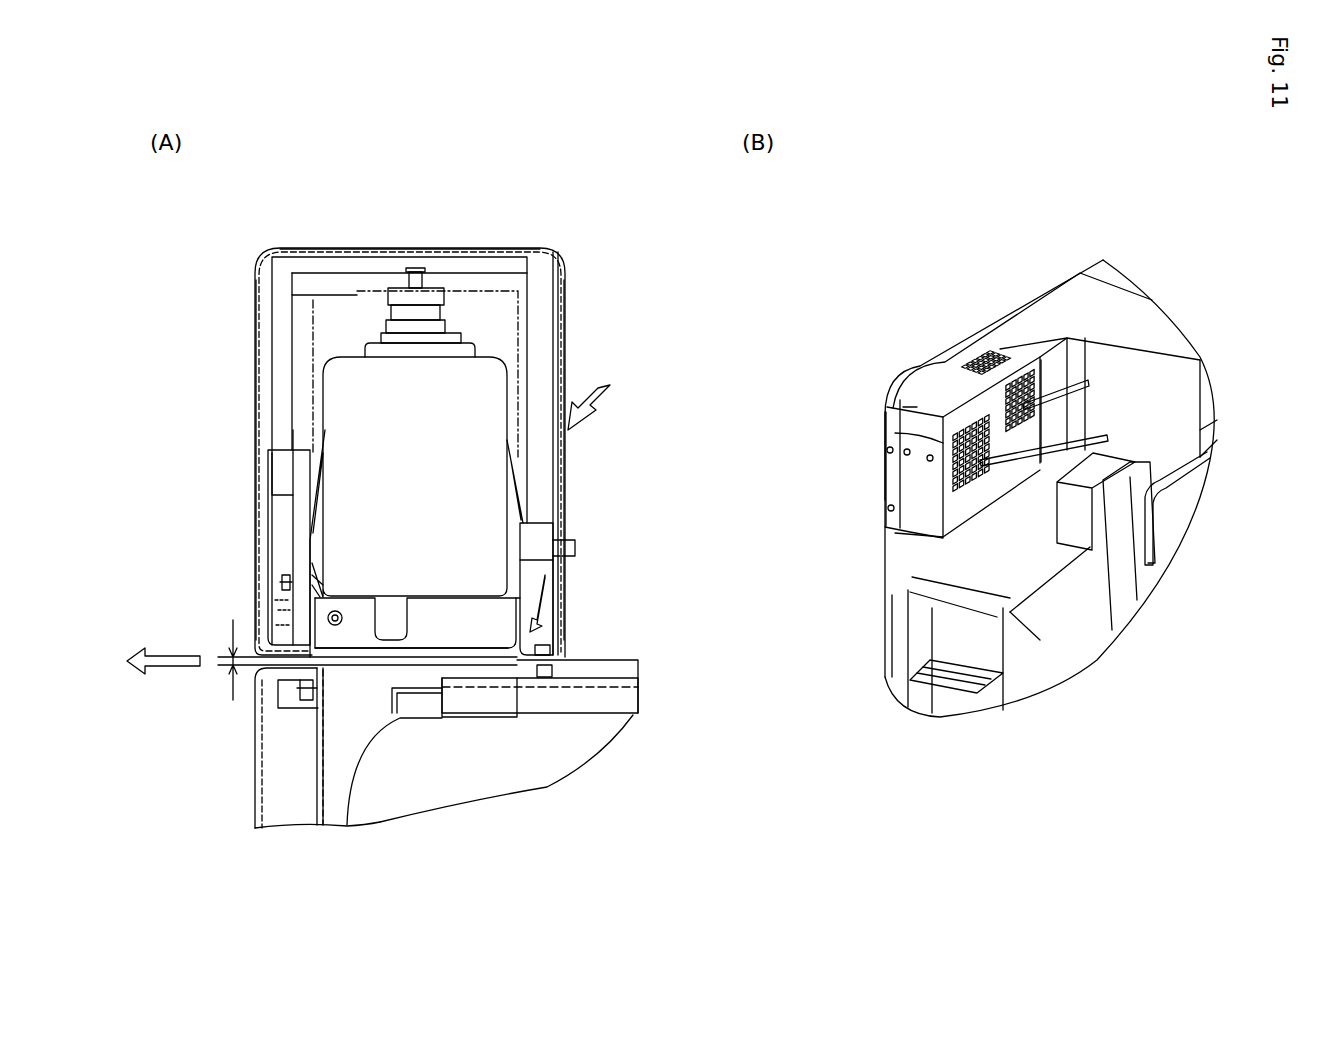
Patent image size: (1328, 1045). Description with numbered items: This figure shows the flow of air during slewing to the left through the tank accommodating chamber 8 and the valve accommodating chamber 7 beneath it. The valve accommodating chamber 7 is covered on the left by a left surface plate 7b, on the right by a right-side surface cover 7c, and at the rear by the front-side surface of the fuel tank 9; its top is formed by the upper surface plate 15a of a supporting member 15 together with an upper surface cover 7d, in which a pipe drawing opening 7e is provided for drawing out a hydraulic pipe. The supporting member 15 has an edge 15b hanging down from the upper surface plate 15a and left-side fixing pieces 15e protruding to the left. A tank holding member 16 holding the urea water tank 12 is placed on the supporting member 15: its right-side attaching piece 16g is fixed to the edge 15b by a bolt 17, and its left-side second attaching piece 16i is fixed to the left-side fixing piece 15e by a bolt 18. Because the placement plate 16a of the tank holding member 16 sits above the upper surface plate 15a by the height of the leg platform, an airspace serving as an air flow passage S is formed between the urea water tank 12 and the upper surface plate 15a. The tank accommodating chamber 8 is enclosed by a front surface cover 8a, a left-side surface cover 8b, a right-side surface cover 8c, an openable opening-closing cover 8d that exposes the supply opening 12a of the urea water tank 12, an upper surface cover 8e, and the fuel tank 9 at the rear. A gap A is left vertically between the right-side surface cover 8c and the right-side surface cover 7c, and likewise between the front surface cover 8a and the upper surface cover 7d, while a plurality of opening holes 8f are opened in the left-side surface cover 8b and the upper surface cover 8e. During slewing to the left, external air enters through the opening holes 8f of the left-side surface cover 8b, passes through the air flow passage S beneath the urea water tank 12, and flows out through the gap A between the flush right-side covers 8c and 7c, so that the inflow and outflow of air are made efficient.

The valve accommodating chamber 7 is at (507, 778).
The left surface plate 7b is at (1050, 657).
The right-side surface cover 7c is at (253, 762).
The upper surface cover 7d is at (983, 570).
The pipe drawing opening 7e is at (1110, 463).
The tank accommodating chamber 8 is at (492, 306).
The front surface cover 8a is at (912, 485).
The left-side surface cover 8b is at (565, 330).
The right-side surface cover 8c is at (255, 333).
The opening-closing cover 8d is at (460, 247).
The upper surface cover 8e is at (967, 350).
The opening holes 8f is at (598, 388).
The fuel tank 9 is at (1067, 313).
The urea water tank 12 is at (368, 408).
The supply opening 12a is at (403, 290).
The supporting member 15 is at (313, 770).
The upper surface plate 15a is at (462, 668).
The edge 15b is at (317, 722).
The left-side fixing piece 15e is at (523, 665).
The tank holding member 16 is at (550, 493).
The placement plate 16a is at (360, 645).
The right-side attaching piece 16g is at (310, 623).
The left-side second attaching piece 16i is at (553, 650).
The bolt 17 is at (292, 688).
The bolt 18 is at (545, 650).
The air flow passage S is at (439, 672).
The gap A is at (182, 660).